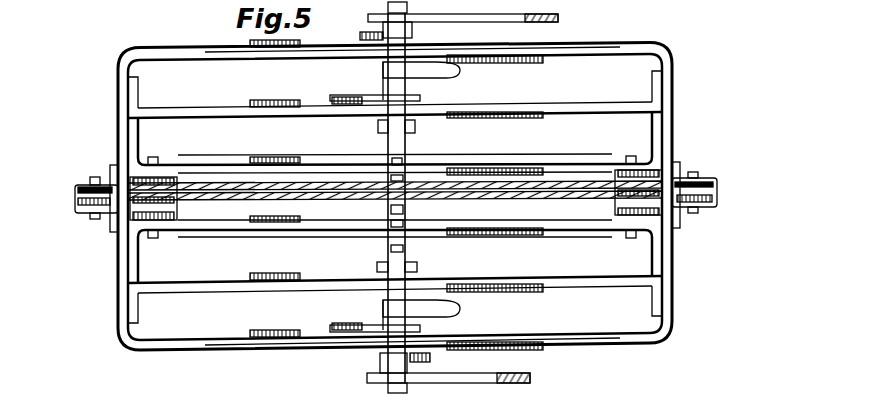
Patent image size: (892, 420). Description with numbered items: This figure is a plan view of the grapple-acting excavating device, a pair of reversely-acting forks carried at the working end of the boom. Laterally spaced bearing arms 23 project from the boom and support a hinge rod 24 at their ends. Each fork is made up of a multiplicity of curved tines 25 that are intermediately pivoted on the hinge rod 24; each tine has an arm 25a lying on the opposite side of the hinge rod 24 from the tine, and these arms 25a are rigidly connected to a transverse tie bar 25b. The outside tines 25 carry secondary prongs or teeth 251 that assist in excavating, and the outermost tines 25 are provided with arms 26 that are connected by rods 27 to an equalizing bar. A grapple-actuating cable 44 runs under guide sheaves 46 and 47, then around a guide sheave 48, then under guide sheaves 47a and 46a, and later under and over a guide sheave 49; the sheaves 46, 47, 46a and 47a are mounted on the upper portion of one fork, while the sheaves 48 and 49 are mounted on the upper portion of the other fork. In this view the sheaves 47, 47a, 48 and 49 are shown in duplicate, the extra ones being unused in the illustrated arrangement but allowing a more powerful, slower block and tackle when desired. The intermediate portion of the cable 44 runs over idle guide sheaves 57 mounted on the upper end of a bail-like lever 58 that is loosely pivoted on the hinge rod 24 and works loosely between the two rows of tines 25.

The bearing arms 23 is at (558, 18).
The hinge rod 24 is at (399, 393).
The curved tines 25 is at (266, 157).
The secondary prongs or teeth 251 is at (360, 34).
The arms 25a is at (205, 53).
The transverse tie bar 25b is at (118, 124).
The arms 26 is at (383, 66).
The rods 27 is at (405, 84).
The grapple-actuating cable 44 is at (78, 202).
The guide sheave 46 is at (702, 206).
The guide sheave 46a is at (703, 179).
The guide sheave 47 is at (622, 210).
The guide sheave 47a is at (612, 178).
The guide sheave 48 is at (157, 187).
The guide sheave 49 is at (93, 178).
The idle guide sheaves 57 is at (412, 178).
The bail-like lever 58 is at (388, 142).